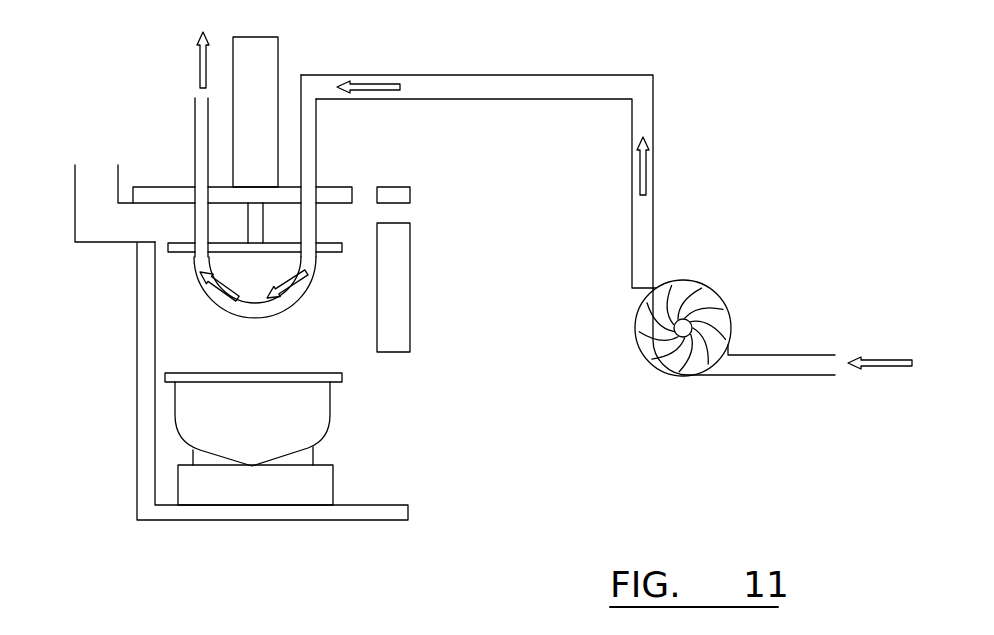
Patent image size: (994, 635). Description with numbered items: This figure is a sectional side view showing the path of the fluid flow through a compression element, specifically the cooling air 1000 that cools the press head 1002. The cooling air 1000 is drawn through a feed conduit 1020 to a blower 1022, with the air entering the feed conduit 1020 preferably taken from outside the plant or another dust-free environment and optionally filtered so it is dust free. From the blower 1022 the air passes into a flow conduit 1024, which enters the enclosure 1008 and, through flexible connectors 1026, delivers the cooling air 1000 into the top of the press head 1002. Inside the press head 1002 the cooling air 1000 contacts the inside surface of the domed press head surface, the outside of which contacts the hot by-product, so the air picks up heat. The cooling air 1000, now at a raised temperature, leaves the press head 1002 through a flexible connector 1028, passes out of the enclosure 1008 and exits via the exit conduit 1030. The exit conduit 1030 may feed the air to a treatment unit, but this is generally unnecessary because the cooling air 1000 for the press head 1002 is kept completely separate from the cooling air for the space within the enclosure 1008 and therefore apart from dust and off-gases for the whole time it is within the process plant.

The cooling air 1000 is at (885, 357).
The press head 1002 is at (293, 302).
The enclosure 1008 is at (125, 448).
The feed conduit 1020 is at (805, 363).
The blower 1022 is at (702, 290).
The flow conduit 1024 is at (645, 232).
The flexible connectors 1026 is at (308, 223).
The flexible connector 1028 is at (200, 222).
The exit conduit 1030 is at (202, 135).